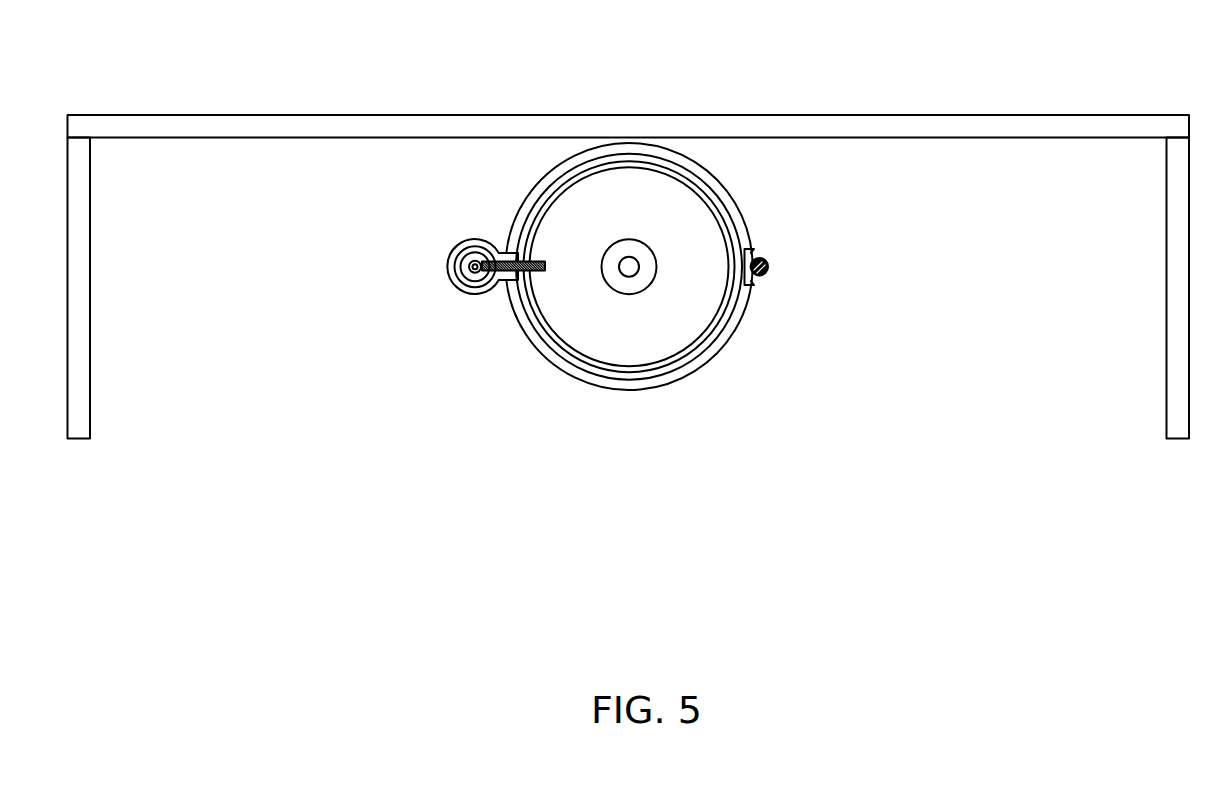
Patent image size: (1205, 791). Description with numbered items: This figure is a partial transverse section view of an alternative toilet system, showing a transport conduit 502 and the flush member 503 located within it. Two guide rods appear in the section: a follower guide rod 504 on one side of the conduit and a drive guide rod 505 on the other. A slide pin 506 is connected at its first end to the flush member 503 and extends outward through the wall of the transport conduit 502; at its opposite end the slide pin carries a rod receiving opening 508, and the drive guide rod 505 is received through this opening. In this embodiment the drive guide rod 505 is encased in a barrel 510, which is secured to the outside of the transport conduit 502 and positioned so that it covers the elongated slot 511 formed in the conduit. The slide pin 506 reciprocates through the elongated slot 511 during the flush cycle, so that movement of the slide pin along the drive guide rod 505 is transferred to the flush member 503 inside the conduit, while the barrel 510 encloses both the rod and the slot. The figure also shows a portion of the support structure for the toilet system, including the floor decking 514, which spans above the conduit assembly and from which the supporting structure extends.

The transport conduit 502 is at (738, 209).
The flush member 503 is at (693, 342).
The follower guide rod 504 is at (763, 273).
The drive guide rod 505 is at (472, 267).
The slide pin 506 is at (491, 243).
The rod receiving opening 508 is at (475, 273).
The barrel 510 is at (451, 287).
The elongated slot 511 is at (515, 312).
The floor decking 514 is at (728, 127).